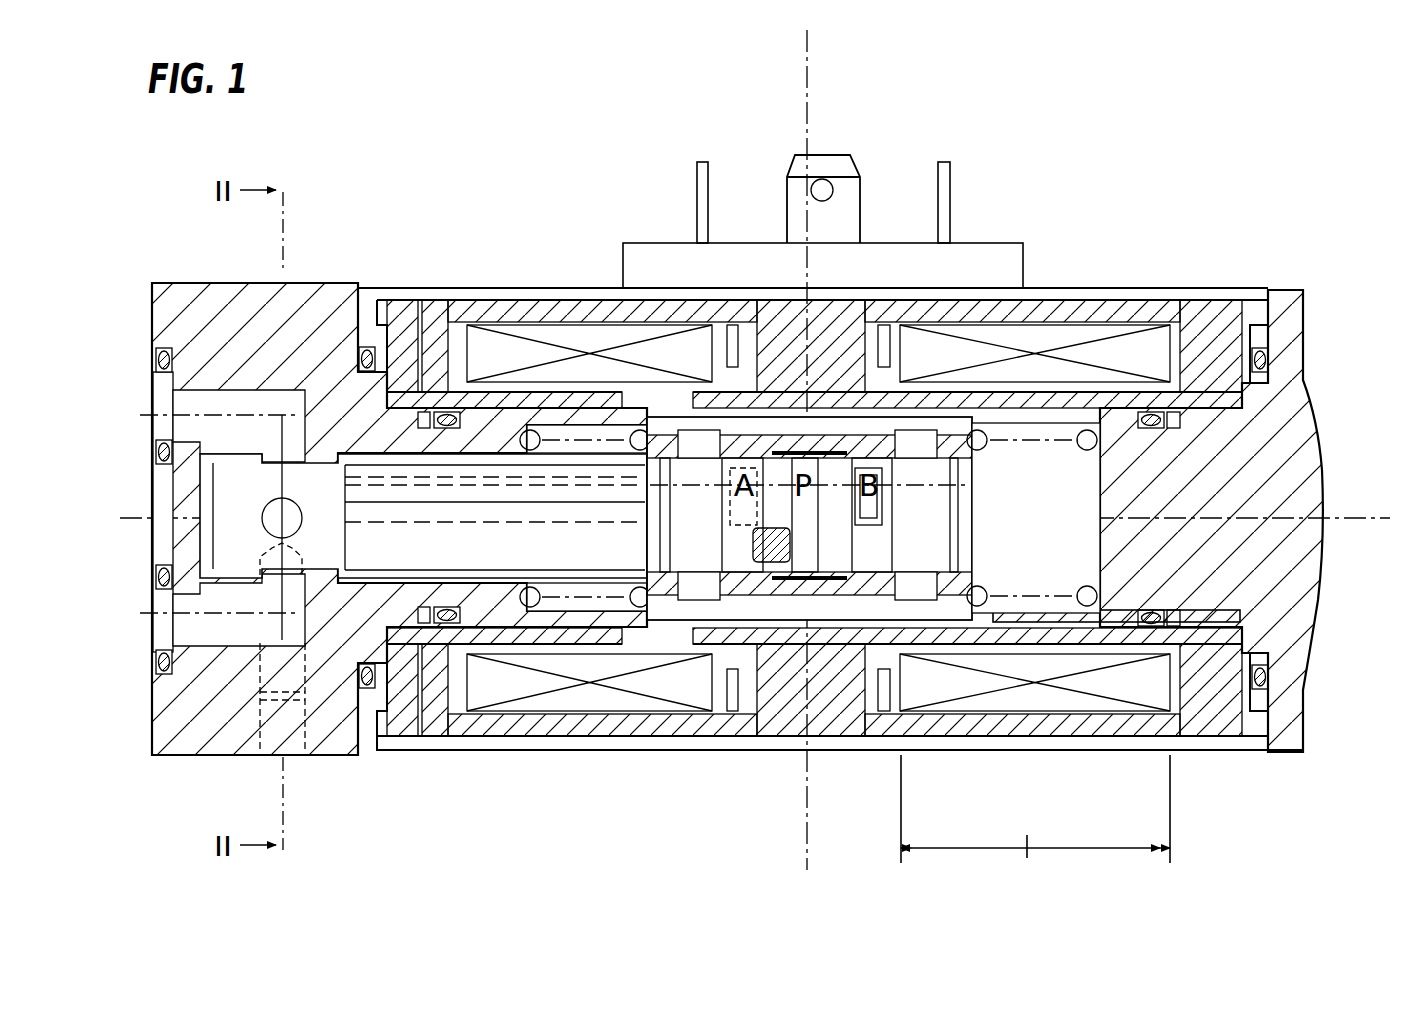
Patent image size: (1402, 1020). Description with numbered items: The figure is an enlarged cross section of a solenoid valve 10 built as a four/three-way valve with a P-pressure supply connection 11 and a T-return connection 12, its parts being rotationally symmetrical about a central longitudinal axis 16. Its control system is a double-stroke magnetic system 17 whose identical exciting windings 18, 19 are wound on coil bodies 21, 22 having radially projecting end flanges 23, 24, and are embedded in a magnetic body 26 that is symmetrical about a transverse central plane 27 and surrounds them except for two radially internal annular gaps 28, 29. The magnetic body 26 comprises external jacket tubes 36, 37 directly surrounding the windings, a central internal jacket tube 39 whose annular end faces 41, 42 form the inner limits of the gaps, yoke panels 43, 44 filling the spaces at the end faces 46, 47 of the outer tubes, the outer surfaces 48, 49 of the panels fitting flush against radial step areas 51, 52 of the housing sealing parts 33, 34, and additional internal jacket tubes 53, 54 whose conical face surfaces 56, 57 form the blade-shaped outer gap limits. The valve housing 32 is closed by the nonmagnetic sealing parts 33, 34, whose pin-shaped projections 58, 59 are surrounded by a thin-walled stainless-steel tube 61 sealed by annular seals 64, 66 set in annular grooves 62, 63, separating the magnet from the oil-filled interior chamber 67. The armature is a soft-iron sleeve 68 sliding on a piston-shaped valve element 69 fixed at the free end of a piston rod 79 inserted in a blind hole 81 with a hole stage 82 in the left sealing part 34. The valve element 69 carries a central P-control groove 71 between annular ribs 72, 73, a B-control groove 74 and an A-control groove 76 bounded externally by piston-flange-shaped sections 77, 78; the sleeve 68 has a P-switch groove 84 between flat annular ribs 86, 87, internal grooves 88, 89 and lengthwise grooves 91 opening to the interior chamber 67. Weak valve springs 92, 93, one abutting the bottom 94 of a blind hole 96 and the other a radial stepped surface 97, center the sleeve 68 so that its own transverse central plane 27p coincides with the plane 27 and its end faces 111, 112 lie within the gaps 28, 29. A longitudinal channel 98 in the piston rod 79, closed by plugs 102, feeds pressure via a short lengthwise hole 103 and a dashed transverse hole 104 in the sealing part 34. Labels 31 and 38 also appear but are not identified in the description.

The solenoid valve 10 is at (1193, 165).
The P-pressure supply connection 11 is at (160, 632).
The T-return connection 12 is at (160, 398).
The central longitudinal axis 16 is at (1348, 518).
The double-stroke magnetic system 17 is at (1073, 296).
The exciting winding 18 is at (1040, 315).
The exciting winding 19 is at (565, 315).
The coil body 21 is at (1150, 330).
The coil body 22 is at (520, 335).
The end flange 23 is at (705, 360).
The end flange 24 is at (433, 330).
The magnetic body 26 is at (767, 740).
The transverse central plane 27 is at (808, 110).
The transverse central plane of movable valve element 27p is at (775, 420).
The annular gap 28 is at (975, 330).
The annular gap 29 is at (660, 400).
The yoke plate 31 is at (505, 720).
The valve housing 32 is at (1306, 316).
The housing sealing part 33 is at (1290, 405).
The housing sealing part 34 is at (170, 330).
The external jacket tube 36 is at (1100, 700).
The external jacket tube 37 is at (560, 680).
The spool land 38 is at (850, 560).
The central internal jacket tube 39 is at (970, 640).
The annular end face 41 is at (950, 393).
The annular end face 42 is at (686, 395).
The yoke panel 43 is at (1258, 335).
The yoke panel 44 is at (405, 330).
The end face of outer jacket tube 46 is at (1207, 700).
The end face of outer jacket tube 47 is at (428, 690).
The outer surface of yoke panel 48 is at (1240, 690).
The outer surface of yoke panel 49 is at (392, 720).
The radial step area 51 is at (1300, 372).
The radial step area 52 is at (368, 348).
The additional internal jacket tube 53 is at (1230, 617).
The additional internal jacket tube 54 is at (300, 597).
The conically-shaped face surface 56 is at (1030, 720).
The conically-shaped face surface 57 is at (605, 700).
The pin-shaped projection 58 is at (1270, 535).
The pin-shaped projection 59 is at (455, 585).
The thin-walled tube 61 is at (1210, 422).
The external annular groove 62 is at (1174, 430).
The external annular groove 63 is at (358, 444).
The annular seal 64 is at (1151, 430).
The annular seal 66 is at (465, 420).
The interior chamber 67 is at (1312, 560).
The sleeve 68 is at (735, 330).
The piston-shaped valve element 69 is at (932, 545).
The P-control groove 71 is at (795, 560).
The annular-flange-shaped rib 72 is at (825, 560).
The annular-flange-shaped rib 73 is at (720, 630).
The B-control groove 74 is at (880, 650).
The A-control groove 76 is at (690, 650).
The piston-flange-shaped section 77 is at (915, 640).
The piston-flange-shaped section 78 is at (655, 640).
The piston rod 79 is at (470, 690).
The blind hole 81 is at (352, 430).
The blind-ended hole stage 82 is at (345, 452).
The P-switch groove 84 is at (860, 350).
The flat annular rib 86 is at (905, 515).
The flat annular rib 87 is at (711, 515).
The internal groove 88 is at (960, 430).
The internal groove 89 is at (633, 470).
The lengthwise groove 91 is at (1000, 335).
The valve spring 92 is at (1045, 440).
The valve spring 93 is at (575, 582).
The bottom of blind hole 94 is at (1085, 533).
The blind hole 96 is at (1100, 600).
The radial stepped surface 97 is at (485, 600).
The longitudinal channel 98 is at (775, 600).
The plug 102 is at (190, 470).
The short lengthwise hole 103 is at (165, 685).
The transverse hole 104 is at (303, 612).
The annular end face 111 is at (1128, 315).
The annular end face 112 is at (622, 400).